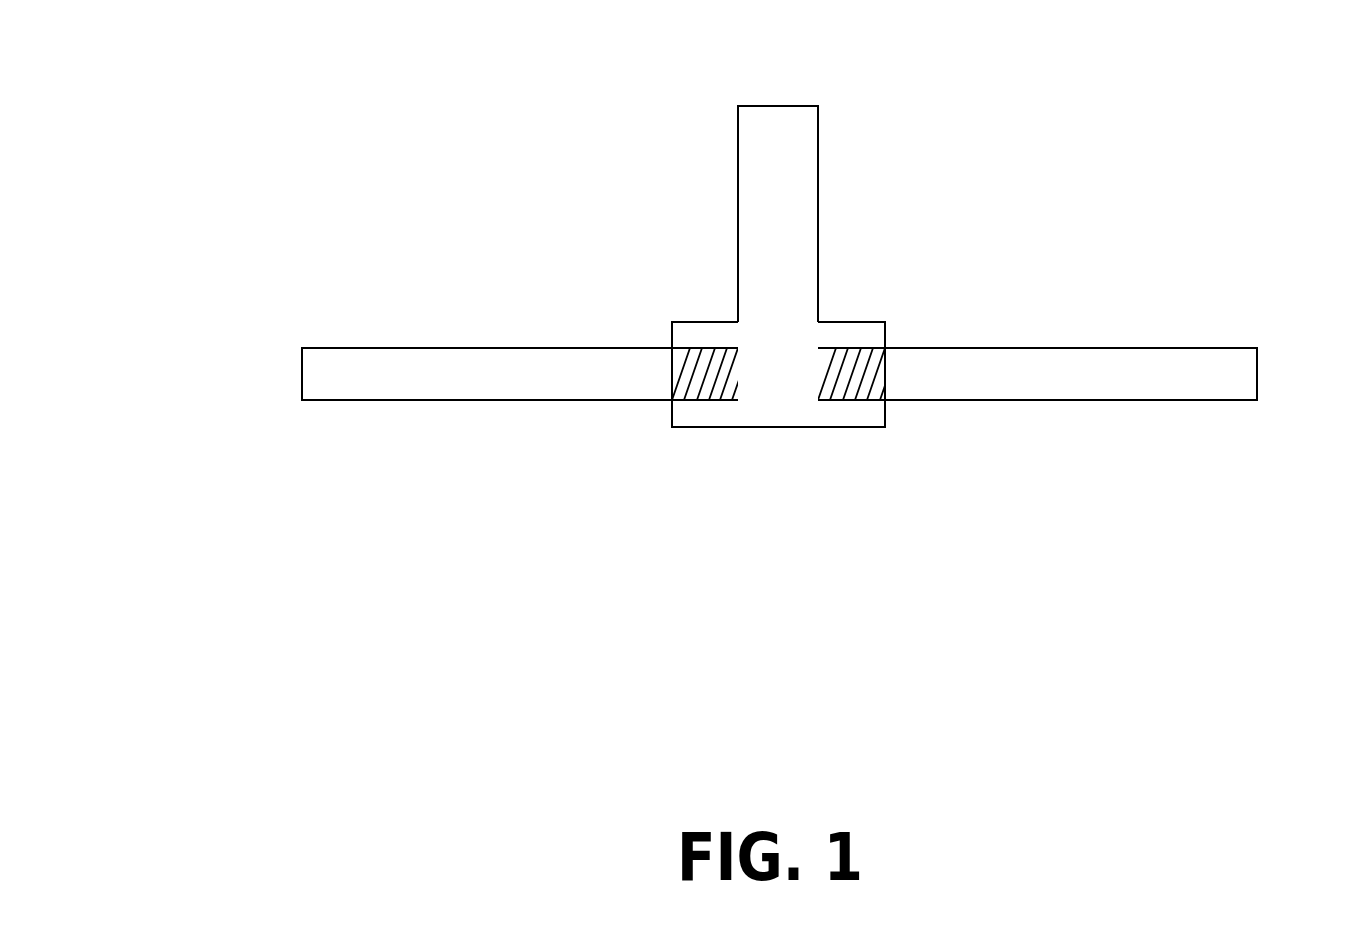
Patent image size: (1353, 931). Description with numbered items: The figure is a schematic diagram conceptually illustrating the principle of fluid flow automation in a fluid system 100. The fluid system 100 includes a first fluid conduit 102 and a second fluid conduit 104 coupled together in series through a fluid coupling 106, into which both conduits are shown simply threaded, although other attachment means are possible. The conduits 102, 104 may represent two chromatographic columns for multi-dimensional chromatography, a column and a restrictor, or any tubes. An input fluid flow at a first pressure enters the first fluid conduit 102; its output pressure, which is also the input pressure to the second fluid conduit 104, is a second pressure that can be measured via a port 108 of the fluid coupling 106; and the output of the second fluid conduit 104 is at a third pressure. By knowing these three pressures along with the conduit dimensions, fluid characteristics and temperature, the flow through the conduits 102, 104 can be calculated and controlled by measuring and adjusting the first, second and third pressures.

The fluid system 100 is at (322, 66).
The first fluid conduit 102 is at (486, 402).
The second fluid conduit 104 is at (1071, 402).
The fluid coupling 106 is at (738, 185).
The port 108 is at (792, 105).